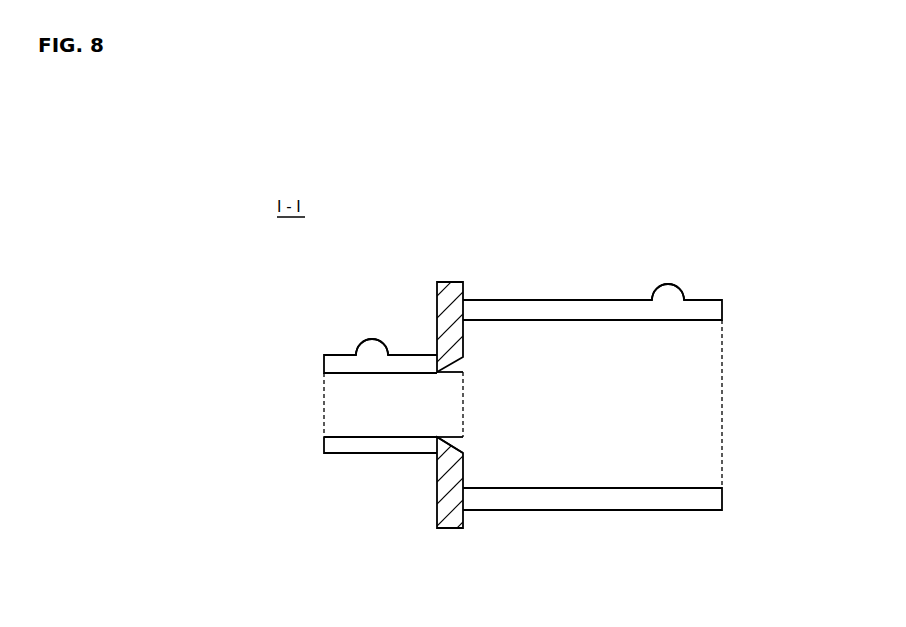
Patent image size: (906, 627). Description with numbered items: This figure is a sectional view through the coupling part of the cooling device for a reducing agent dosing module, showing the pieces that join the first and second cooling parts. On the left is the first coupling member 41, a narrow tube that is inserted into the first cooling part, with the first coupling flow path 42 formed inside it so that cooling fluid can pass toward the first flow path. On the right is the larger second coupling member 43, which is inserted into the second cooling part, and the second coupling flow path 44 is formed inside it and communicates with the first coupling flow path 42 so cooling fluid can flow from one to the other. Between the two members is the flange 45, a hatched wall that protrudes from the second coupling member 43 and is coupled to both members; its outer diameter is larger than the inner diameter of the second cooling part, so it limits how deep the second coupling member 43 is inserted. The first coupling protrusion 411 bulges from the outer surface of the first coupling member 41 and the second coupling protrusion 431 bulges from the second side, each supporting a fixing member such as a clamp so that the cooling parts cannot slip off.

The first coupling member 41 is at (343, 363).
The first coupling protrusion 411 is at (373, 350).
The first coupling flow path 42 is at (388, 405).
The second coupling member 43 is at (708, 308).
The second coupling protrusion 431 is at (669, 292).
The second coupling flow path 44 is at (636, 455).
The flange 45 is at (452, 292).